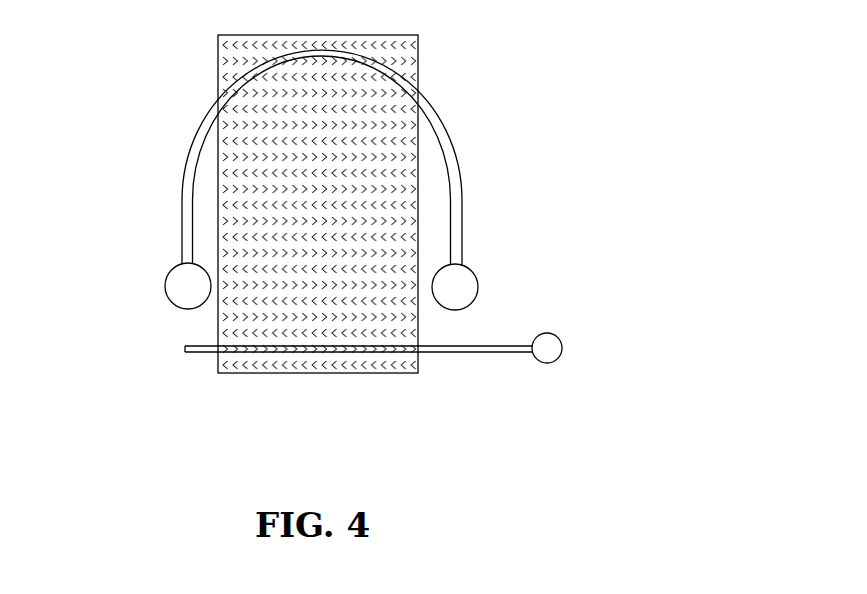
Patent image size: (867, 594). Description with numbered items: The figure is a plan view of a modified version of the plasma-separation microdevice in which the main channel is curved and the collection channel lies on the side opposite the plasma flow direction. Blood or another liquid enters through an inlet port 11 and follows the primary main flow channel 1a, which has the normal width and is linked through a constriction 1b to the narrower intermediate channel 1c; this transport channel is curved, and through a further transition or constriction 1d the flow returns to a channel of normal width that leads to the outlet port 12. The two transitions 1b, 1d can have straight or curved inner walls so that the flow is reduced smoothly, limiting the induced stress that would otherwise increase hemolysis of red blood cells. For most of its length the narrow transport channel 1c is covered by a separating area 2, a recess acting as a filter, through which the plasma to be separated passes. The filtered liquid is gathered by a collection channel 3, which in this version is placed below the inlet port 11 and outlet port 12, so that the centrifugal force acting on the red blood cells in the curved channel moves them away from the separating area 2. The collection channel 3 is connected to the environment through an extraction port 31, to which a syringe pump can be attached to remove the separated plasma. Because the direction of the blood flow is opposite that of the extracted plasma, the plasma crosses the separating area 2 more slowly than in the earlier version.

The primary main flow channel 1a is at (185, 230).
The constriction 1b is at (185, 185).
The intermediate channel 1c is at (212, 108).
The transition or constriction 1d is at (452, 210).
The separating area 2 is at (398, 52).
The collection channel 3 is at (207, 350).
The inlet port 11 is at (175, 292).
The outlet port 12 is at (470, 297).
The extraction port 31 is at (548, 348).